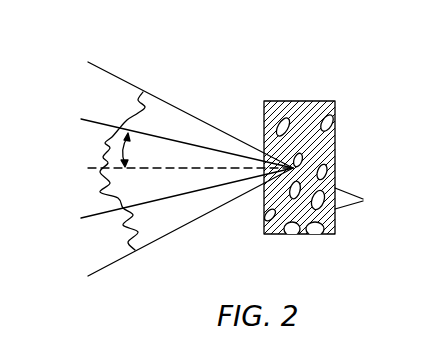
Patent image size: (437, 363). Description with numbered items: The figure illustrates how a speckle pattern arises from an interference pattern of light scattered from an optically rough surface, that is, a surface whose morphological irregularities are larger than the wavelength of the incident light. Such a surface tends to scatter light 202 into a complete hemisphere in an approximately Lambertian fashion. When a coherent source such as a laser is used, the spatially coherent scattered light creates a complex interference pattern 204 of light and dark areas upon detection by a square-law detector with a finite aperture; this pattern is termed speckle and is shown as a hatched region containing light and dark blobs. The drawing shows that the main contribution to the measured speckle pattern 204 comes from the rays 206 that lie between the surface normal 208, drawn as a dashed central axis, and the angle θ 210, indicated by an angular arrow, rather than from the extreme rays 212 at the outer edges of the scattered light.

The scattered light 202 is at (99, 145).
The complex interference pattern 204 is at (318, 90).
The rays 206 is at (140, 133).
The surface normal 208 is at (88, 168).
The angle θ 210 is at (140, 152).
The extreme rays 212 is at (168, 103).